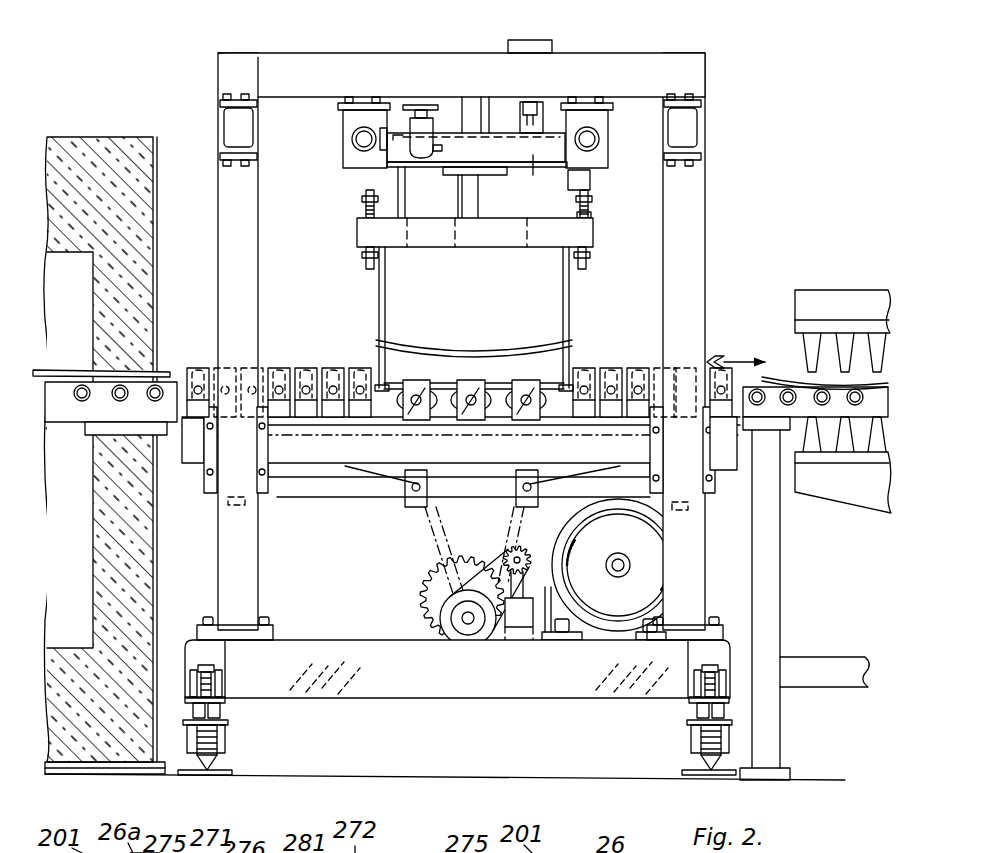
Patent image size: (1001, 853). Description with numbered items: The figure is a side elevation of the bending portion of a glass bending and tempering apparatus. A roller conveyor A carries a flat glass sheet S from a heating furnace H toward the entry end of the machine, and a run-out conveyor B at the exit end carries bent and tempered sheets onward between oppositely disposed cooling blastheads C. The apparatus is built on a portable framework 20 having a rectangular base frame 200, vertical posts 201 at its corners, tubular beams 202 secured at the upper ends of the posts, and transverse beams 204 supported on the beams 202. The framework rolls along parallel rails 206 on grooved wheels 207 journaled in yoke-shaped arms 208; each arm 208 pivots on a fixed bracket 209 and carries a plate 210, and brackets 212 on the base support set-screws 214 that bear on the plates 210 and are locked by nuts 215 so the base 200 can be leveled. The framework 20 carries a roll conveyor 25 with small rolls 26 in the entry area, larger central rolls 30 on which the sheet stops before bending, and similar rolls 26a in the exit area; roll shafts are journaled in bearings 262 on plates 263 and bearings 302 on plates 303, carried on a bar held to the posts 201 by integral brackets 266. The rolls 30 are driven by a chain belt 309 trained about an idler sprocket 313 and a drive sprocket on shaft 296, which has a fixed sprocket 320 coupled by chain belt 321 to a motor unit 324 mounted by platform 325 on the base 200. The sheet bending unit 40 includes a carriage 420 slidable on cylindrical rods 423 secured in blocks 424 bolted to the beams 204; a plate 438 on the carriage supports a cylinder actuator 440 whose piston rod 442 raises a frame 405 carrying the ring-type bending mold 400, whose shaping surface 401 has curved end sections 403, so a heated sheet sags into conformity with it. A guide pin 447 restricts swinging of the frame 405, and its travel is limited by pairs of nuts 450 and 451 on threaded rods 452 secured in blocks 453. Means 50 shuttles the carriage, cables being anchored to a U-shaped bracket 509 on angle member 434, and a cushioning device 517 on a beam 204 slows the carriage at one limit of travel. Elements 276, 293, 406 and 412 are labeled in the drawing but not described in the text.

The portable framework 20 is at (497, 315).
The roll conveyor 25 is at (330, 352).
The rolls 26 is at (200, 360).
The rolls 26a is at (618, 366).
The rolls 30 is at (525, 586).
The sheet bending unit 40 is at (466, 208).
The means for moving the bending unit 50 is at (500, 40).
The base frame 200 is at (298, 705).
The posts 201 is at (690, 224).
The tubular members or beams 202 is at (218, 124).
The beams 204 is at (277, 65).
The tracks or rails 206 is at (205, 776).
The grooved wheels 207 is at (215, 760).
The yoke-shaped arms 208 is at (225, 745).
The fixed bracket 209 is at (222, 708).
The plate 210 is at (228, 723).
The brackets 212 is at (212, 672).
The set-screws 214 is at (688, 700).
The nuts 215 is at (688, 718).
The bearing 262 is at (277, 367).
The plate 263 is at (340, 367).
The integral brackets 266 is at (193, 455).
The connecting rod 276 is at (430, 571).
The belt drive 293 is at (440, 628).
The shaft 296 is at (462, 628).
The bearing 302 is at (526, 382).
The plate 303 is at (416, 380).
The chain belt 309 is at (440, 579).
The idler sprocket 313 is at (410, 499).
The sprocket 320 is at (468, 634).
The chain belt 321 is at (492, 588).
The motor unit 324 is at (648, 577).
The platform 325 is at (582, 642).
The bending mold 400 is at (474, 348).
The shaping surface 401 is at (492, 382).
The end sections 403 is at (505, 385).
The frame 405 is at (457, 352).
The guide rails 406 is at (378, 298).
The cross beam 412 is at (592, 236).
The carriage 420 is at (424, 180).
The cylindrical rods 423 is at (350, 134).
The blocks 424 is at (386, 156).
The angle member 434 is at (534, 157).
The plate 438 is at (462, 176).
The cylinder actuator 440 is at (462, 121).
The piston rod 442 is at (480, 208).
The guide pin 447 is at (393, 172).
The nuts 450 is at (368, 258).
The nuts 451 is at (366, 201).
The threaded rods 452 is at (590, 220).
The block 453 is at (592, 181).
The U-shaped bracket 509 is at (536, 121).
The cushioning device 517 is at (380, 143).
The heating furnace H is at (117, 134).
The roller conveyor A is at (84, 406).
The run-out conveyor B is at (792, 406).
The cooling blastheads C is at (832, 500).
The sheet of glass S is at (73, 370).